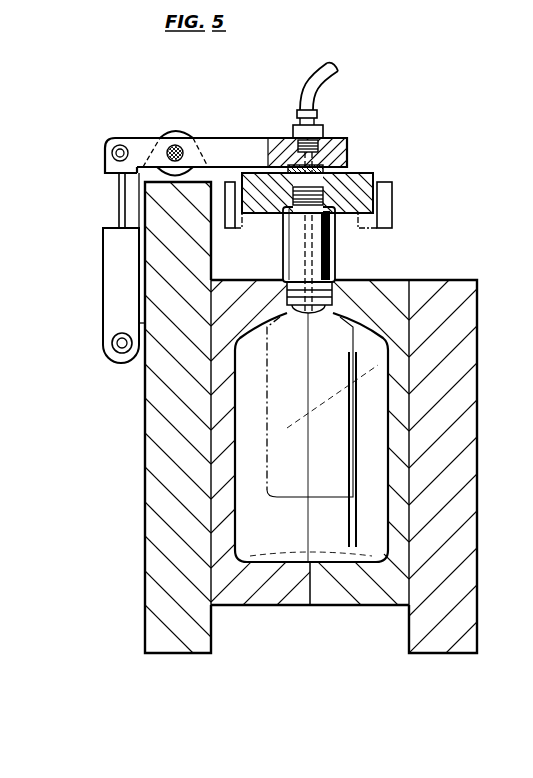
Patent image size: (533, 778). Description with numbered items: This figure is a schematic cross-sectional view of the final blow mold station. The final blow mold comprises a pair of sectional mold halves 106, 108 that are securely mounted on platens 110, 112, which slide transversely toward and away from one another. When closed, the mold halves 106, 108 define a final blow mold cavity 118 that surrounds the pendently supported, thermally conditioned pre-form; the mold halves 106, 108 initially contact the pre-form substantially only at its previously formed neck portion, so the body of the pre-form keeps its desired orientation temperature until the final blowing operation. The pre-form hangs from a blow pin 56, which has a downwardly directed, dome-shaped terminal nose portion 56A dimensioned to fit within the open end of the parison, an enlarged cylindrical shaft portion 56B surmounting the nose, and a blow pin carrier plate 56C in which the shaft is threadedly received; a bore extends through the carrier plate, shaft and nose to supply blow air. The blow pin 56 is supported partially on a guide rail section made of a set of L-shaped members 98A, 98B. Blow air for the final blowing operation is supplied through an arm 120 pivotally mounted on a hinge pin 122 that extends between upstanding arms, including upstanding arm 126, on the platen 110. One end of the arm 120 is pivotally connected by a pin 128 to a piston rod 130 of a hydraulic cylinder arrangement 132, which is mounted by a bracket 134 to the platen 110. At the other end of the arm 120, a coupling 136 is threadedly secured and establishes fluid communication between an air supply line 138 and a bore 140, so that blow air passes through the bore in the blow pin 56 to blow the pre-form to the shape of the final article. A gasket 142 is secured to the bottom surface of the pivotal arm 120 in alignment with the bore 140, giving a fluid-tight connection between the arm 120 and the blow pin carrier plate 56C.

The blow pin 56 is at (342, 252).
The terminal nose portion 56A is at (314, 316).
The cylindrical shaft portion 56B is at (290, 252).
The blow pin carrier plate 56C is at (387, 188).
The L-shaped member 98A is at (232, 183).
The L-shaped member 98B is at (390, 213).
The sectional mold half 106 is at (267, 597).
The sectional mold half 108 is at (360, 597).
The platen 110 is at (153, 435).
The platen 112 is at (465, 433).
The final blow mold cavity 118 is at (233, 502).
The arm 120 is at (341, 139).
The hinge pin 122 is at (171, 146).
The upstanding arm 126 is at (143, 182).
The pin 128 is at (116, 149).
The piston rod 130 is at (118, 207).
The hydraulic cylinder arrangement 132 is at (108, 307).
The bracket 134 is at (133, 363).
The coupling 136 is at (297, 121).
The air supply line 138 is at (318, 76).
The bore 140 is at (313, 158).
The gasket 142 is at (325, 172).